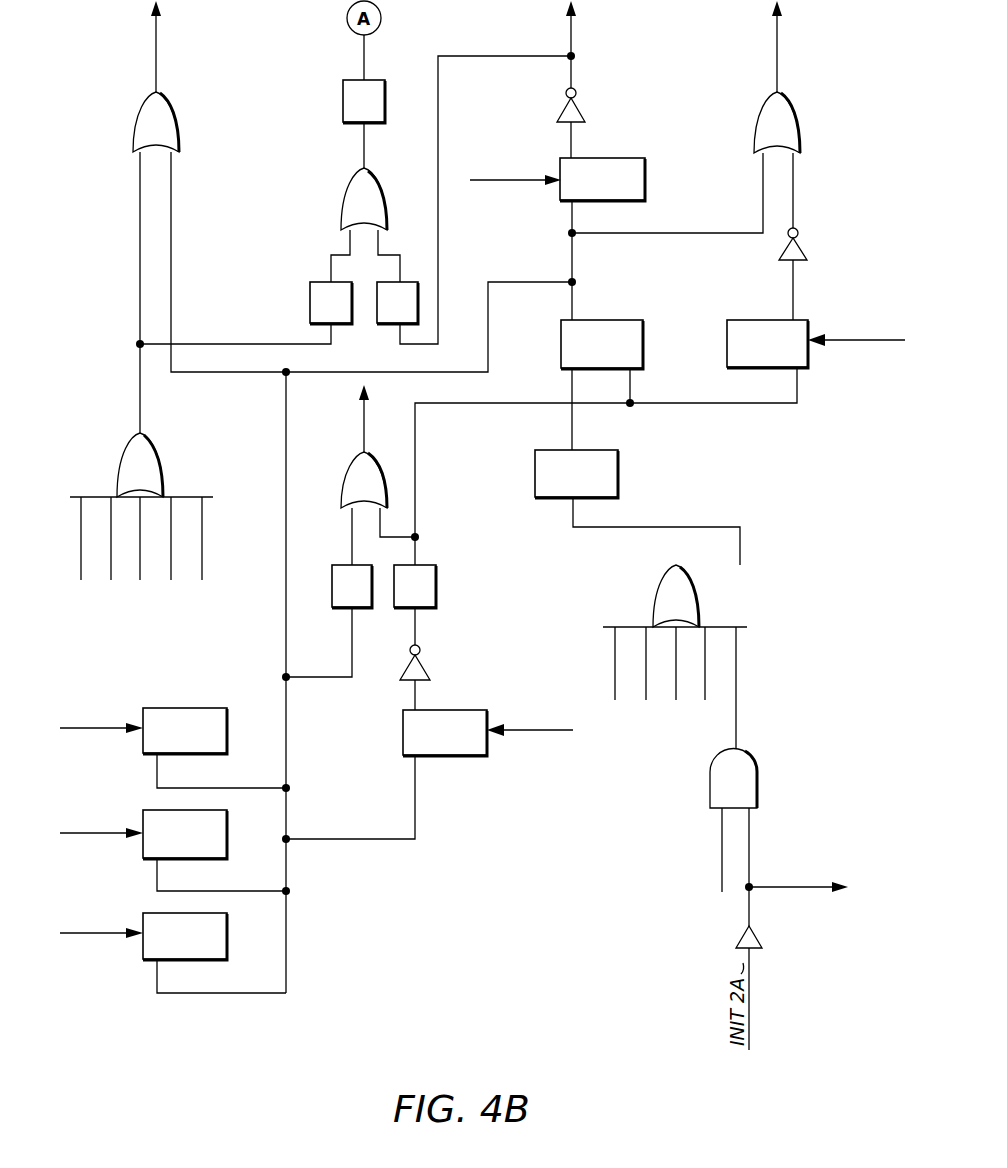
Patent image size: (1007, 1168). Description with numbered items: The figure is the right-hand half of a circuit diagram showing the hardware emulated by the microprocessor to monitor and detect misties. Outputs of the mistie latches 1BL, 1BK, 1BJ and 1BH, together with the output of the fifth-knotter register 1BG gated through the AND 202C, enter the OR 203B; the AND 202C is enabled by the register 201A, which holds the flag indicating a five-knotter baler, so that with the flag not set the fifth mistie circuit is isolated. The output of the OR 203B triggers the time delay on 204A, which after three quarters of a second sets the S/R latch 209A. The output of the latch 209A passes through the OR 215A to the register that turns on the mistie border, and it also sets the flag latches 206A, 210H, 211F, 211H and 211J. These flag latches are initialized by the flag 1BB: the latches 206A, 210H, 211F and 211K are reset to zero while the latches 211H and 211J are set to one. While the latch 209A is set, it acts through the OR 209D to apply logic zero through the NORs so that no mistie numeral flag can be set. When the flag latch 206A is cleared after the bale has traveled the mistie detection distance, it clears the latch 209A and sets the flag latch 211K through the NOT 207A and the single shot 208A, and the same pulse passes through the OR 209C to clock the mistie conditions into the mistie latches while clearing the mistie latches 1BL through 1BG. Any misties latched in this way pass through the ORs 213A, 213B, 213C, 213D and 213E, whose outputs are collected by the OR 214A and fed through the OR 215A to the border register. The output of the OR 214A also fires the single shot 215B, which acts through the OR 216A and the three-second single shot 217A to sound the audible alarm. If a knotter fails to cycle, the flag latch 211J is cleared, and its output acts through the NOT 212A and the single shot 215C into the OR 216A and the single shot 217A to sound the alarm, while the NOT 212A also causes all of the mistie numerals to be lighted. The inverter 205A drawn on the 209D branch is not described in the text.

The OR 215A is at (160, 40).
The 3 second single shot 217A is at (400, 72).
The OR 216A is at (346, 196).
The single shot 215B is at (311, 284).
The single shot 215C is at (394, 330).
The NOT 212A is at (574, 38).
The flag latch 211J is at (620, 158).
The OR 209D is at (780, 38).
The inverter 205A is at (806, 258).
The flag latch 211K is at (756, 300).
The S/R latch 209A is at (656, 312).
The time delay on (TDON) 204A is at (619, 458).
The OR 203B is at (718, 568).
The OR 214A is at (180, 440).
The OR 209C is at (348, 460).
The single shot 208A is at (452, 564).
The NOT 207A is at (430, 666).
The flag latch 206A is at (500, 704).
The flag latch 211H is at (232, 690).
The flag latch 211F is at (228, 832).
The flag latch 210H is at (228, 938).
The AND 202C is at (758, 760).
The register 201A is at (778, 886).
The OR 213A is at (78, 522).
The OR 213B is at (108, 522).
The OR 213C is at (137, 522).
The OR 213D is at (168, 522).
The OR 213E is at (199, 522).
The flag 1BB is at (508, 178).
The register 1BG is at (716, 832).
The S/R register 1BL is at (610, 646).
The mistie latch 1BK is at (641, 646).
The mistie latch 1BJ is at (671, 646).
The mistie latch 1BH is at (700, 646).